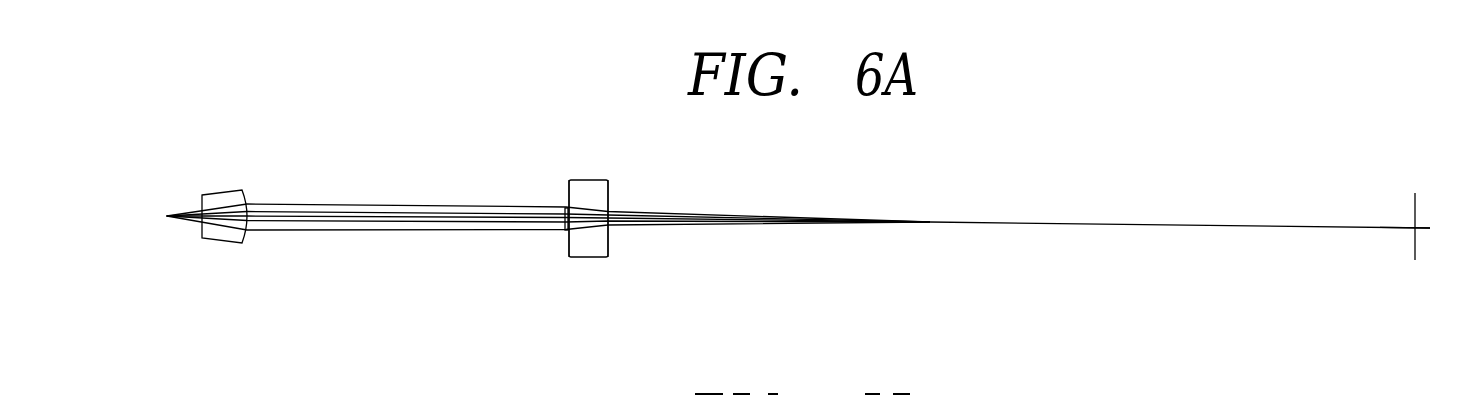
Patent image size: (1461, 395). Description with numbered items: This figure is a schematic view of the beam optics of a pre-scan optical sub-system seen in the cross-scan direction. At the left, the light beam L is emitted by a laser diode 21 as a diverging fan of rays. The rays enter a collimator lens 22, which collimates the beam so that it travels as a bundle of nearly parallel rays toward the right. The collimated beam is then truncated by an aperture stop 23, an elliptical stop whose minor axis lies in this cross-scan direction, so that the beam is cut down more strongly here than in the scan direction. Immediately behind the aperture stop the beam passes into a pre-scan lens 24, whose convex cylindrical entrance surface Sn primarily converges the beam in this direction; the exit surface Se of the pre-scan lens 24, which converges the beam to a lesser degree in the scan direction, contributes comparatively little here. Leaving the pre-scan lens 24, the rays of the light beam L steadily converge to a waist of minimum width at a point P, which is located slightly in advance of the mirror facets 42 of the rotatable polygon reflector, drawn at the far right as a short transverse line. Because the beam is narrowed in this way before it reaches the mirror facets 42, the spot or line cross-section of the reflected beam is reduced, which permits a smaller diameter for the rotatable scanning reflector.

The laser diode 21 is at (166, 216).
The collimator lens 22 is at (225, 193).
The aperture stop 23 is at (567, 212).
The pre-scan lens 24 is at (592, 183).
The light beam L is at (928, 218).
The convex cylindrical entrance surface Sn is at (567, 245).
The exit surface Se is at (608, 245).
The point P is at (1398, 228).
The mirror facets 42 is at (1413, 247).